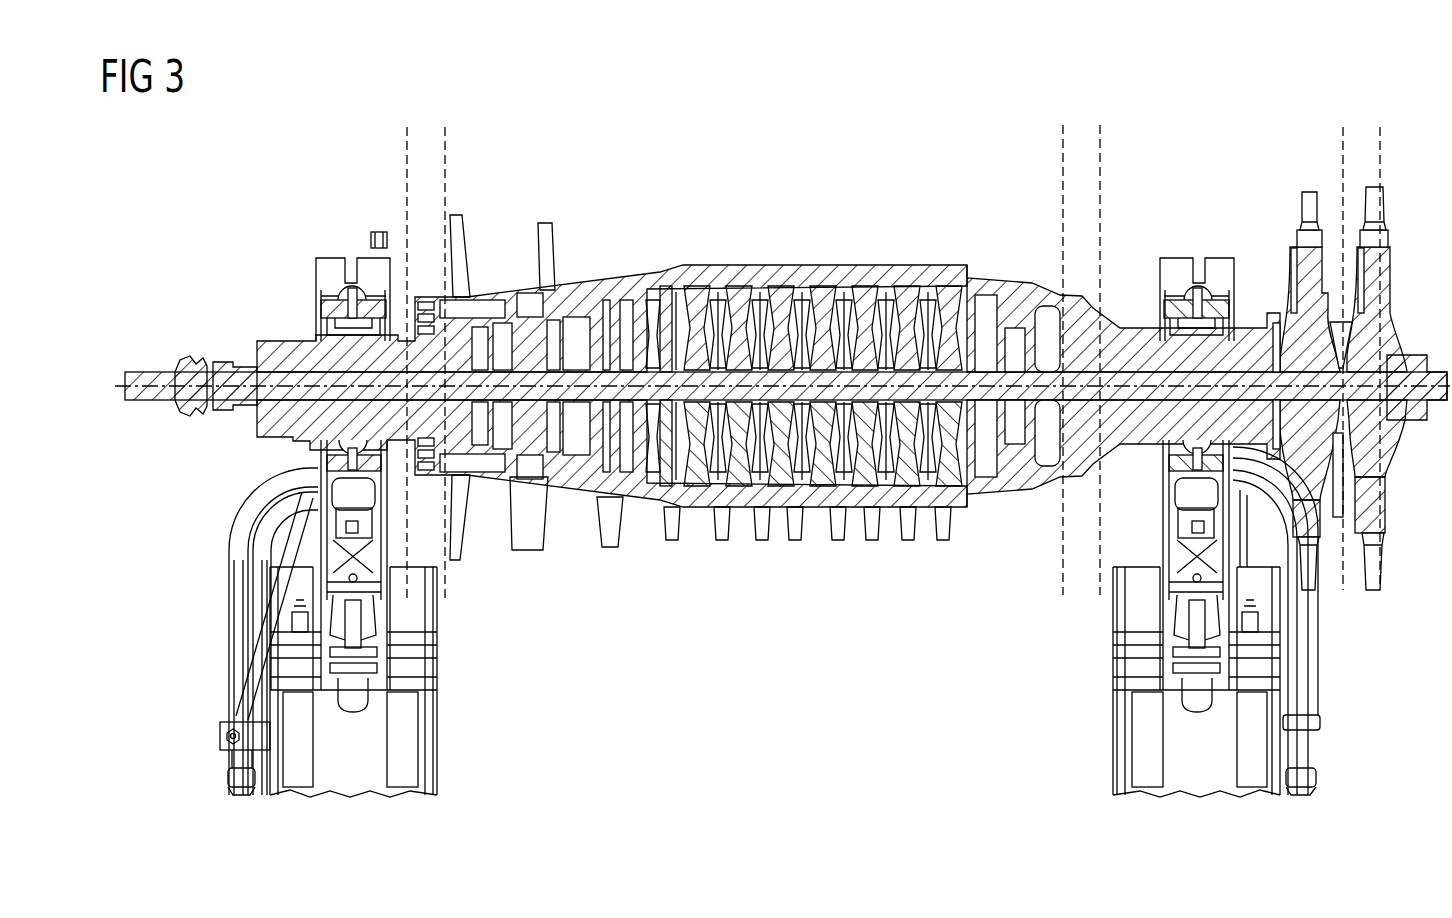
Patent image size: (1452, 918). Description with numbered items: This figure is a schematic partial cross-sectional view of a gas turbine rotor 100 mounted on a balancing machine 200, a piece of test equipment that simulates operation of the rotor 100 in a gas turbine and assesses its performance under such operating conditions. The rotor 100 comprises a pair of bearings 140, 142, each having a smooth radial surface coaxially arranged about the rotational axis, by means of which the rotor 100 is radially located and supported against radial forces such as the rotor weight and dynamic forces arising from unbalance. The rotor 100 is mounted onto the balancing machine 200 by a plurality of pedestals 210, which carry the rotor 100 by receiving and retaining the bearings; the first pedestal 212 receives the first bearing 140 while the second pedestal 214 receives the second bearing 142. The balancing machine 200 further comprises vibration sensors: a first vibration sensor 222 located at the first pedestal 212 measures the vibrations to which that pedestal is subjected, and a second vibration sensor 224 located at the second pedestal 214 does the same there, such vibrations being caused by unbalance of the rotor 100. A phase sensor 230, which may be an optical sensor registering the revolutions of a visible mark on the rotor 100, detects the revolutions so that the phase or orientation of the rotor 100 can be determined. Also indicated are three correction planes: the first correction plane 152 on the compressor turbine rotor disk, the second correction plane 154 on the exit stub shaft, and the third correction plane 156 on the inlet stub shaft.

The rotor 100 is at (766, 186).
The first bearing 140 is at (320, 336).
The second bearing 142 is at (1205, 340).
The first correction plane 152 is at (1363, 142).
The second correction plane 154 is at (1080, 142).
The third correction plane 156 is at (424, 143).
The balancing machine 200 is at (198, 672).
The pedestals 210 is at (440, 705).
The first pedestal 212 is at (349, 270).
The second pedestal 214 is at (1197, 252).
The first vibration sensor 222 is at (362, 526).
The second vibration sensor 224 is at (1180, 527).
The phase sensor 230 is at (376, 232).